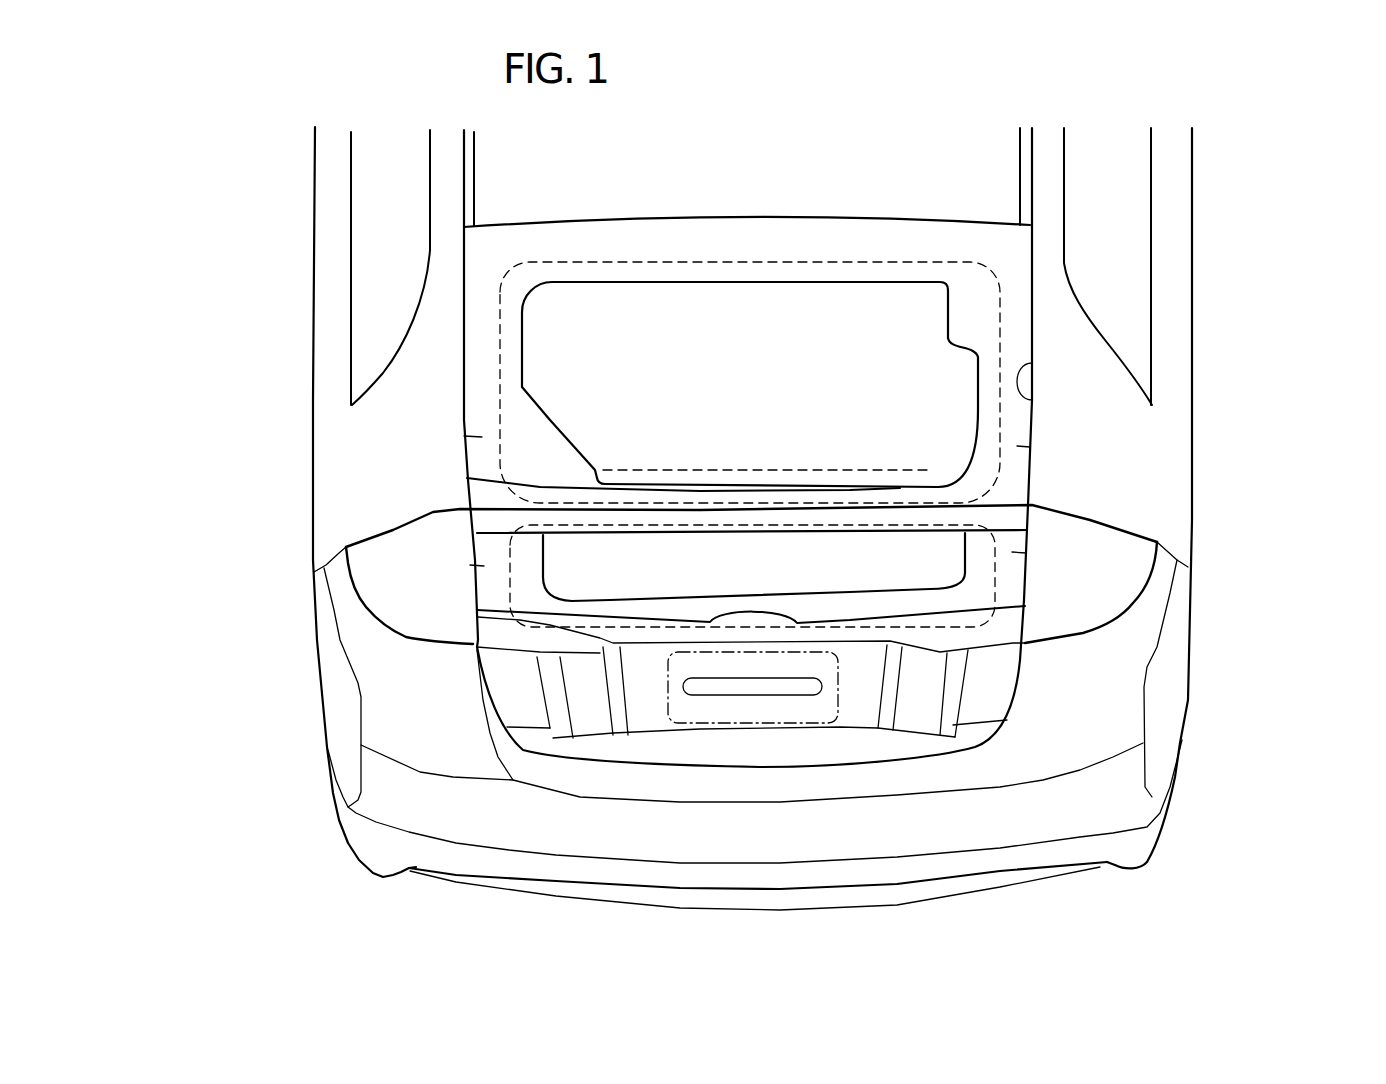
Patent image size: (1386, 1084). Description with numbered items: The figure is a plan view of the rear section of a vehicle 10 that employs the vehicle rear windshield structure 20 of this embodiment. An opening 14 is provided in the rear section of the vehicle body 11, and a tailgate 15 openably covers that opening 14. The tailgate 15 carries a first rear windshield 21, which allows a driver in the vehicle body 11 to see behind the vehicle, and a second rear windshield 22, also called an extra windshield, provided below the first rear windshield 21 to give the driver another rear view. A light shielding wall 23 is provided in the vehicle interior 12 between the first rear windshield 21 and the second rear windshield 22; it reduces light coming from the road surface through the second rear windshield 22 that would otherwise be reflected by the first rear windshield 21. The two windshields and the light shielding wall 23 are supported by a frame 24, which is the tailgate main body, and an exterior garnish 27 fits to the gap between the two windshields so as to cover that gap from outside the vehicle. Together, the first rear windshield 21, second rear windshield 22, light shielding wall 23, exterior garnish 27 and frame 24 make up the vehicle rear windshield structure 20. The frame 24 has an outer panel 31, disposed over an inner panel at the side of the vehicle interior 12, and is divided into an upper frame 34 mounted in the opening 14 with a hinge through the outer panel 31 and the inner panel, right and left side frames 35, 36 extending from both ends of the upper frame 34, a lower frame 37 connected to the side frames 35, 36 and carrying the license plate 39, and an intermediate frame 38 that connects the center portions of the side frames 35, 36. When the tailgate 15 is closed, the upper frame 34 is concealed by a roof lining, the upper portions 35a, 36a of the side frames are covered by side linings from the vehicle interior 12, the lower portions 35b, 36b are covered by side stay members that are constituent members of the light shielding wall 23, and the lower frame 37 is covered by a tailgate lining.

The vehicle 10 is at (220, 137).
The vehicle body 11 is at (272, 238).
The vehicle interior 12 is at (1103, 230).
The opening 14 is at (1032, 363).
The tailgate 15 is at (1025, 678).
The vehicle rear windshield structure 20 is at (905, 92).
The first rear windshield 21 is at (612, 293).
The second rear windshield 22 is at (745, 560).
The light shielding wall 23 is at (668, 468).
The frame 24 is at (658, 245).
The exterior garnish 27 is at (702, 492).
The outer panel 31 is at (992, 708).
The upper frame 34 is at (865, 243).
The right side frame 35 is at (213, 503).
The upper portion of right side frame 35a is at (482, 437).
The lower portion of right side frame 35b is at (482, 565).
The left side frame 36 is at (1287, 490).
The upper portion of left side frame 36a is at (1017, 446).
The lower portion of left side frame 36b is at (1012, 552).
The lower frame 37 is at (797, 753).
The intermediate frame 38 is at (787, 503).
The license plate 39 is at (753, 723).